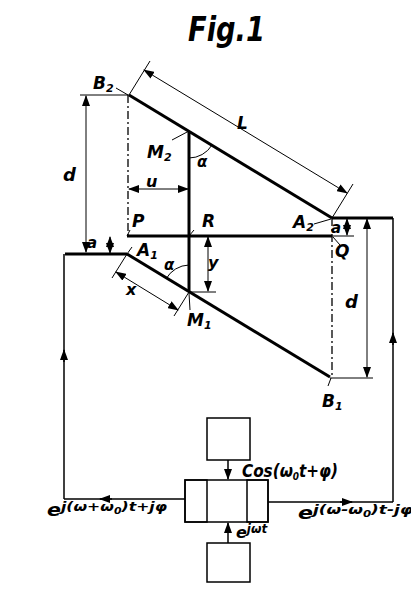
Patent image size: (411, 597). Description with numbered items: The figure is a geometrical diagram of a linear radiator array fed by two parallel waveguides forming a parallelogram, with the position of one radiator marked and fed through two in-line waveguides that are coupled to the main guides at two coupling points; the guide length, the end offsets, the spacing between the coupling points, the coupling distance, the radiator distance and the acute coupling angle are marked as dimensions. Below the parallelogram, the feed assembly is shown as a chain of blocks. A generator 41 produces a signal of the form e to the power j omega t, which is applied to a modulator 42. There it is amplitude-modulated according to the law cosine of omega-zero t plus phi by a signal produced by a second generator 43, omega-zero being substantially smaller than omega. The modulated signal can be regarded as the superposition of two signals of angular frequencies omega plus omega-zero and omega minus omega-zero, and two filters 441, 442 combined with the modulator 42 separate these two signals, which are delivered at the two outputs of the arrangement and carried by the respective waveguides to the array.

The generator 41 is at (242, 576).
The modulator 42 is at (222, 494).
The generator 43 is at (222, 428).
The filter 441 is at (191, 514).
The filter 442 is at (263, 511).